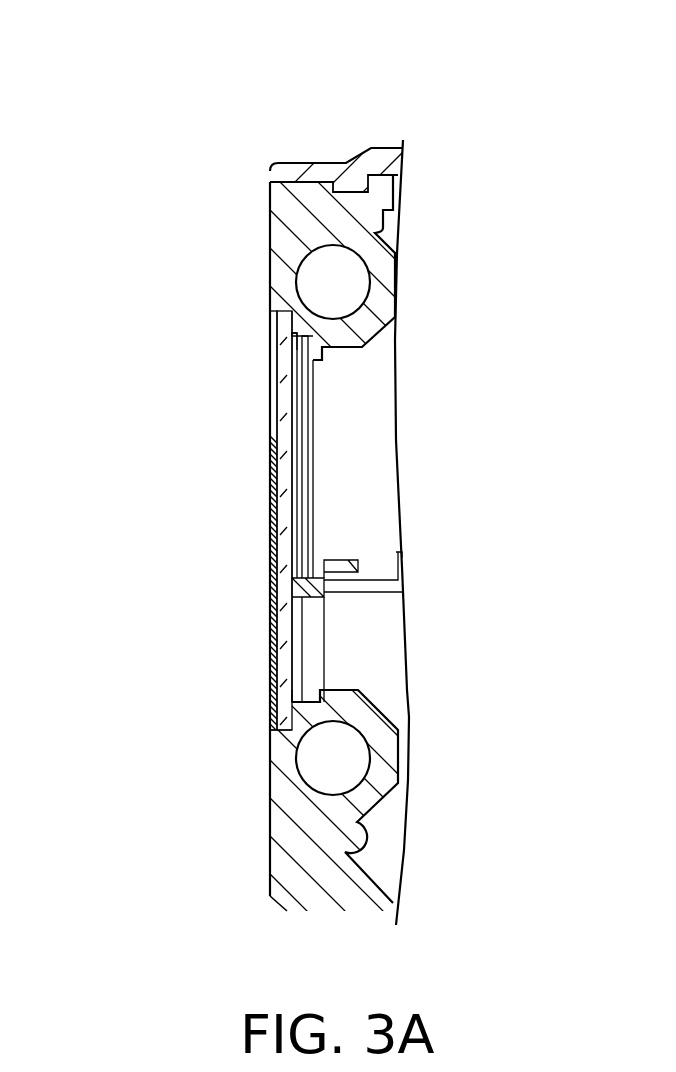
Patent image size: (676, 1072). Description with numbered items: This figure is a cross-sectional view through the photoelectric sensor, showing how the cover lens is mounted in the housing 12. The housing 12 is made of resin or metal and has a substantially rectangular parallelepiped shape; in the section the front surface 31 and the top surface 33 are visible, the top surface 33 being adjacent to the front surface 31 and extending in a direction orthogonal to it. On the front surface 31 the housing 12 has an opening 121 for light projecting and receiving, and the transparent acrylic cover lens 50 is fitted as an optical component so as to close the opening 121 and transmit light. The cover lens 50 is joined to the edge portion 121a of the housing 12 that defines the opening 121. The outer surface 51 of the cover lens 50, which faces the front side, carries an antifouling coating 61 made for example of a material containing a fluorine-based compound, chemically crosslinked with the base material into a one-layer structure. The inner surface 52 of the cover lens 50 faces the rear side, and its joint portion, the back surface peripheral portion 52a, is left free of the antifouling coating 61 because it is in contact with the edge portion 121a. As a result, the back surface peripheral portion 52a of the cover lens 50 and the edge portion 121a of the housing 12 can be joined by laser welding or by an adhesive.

The housing 12 is at (266, 200).
The top surface 33 is at (320, 162).
The front surface 31 is at (270, 242).
The back surface peripheral portion 52a is at (318, 323).
The antifouling coating 61 is at (270, 562).
The outer surface 51 is at (270, 485).
The opening 121 is at (292, 333).
The edge portion 121a is at (290, 314).
The cover lens 50 is at (305, 518).
The inner surface 52 is at (318, 455).